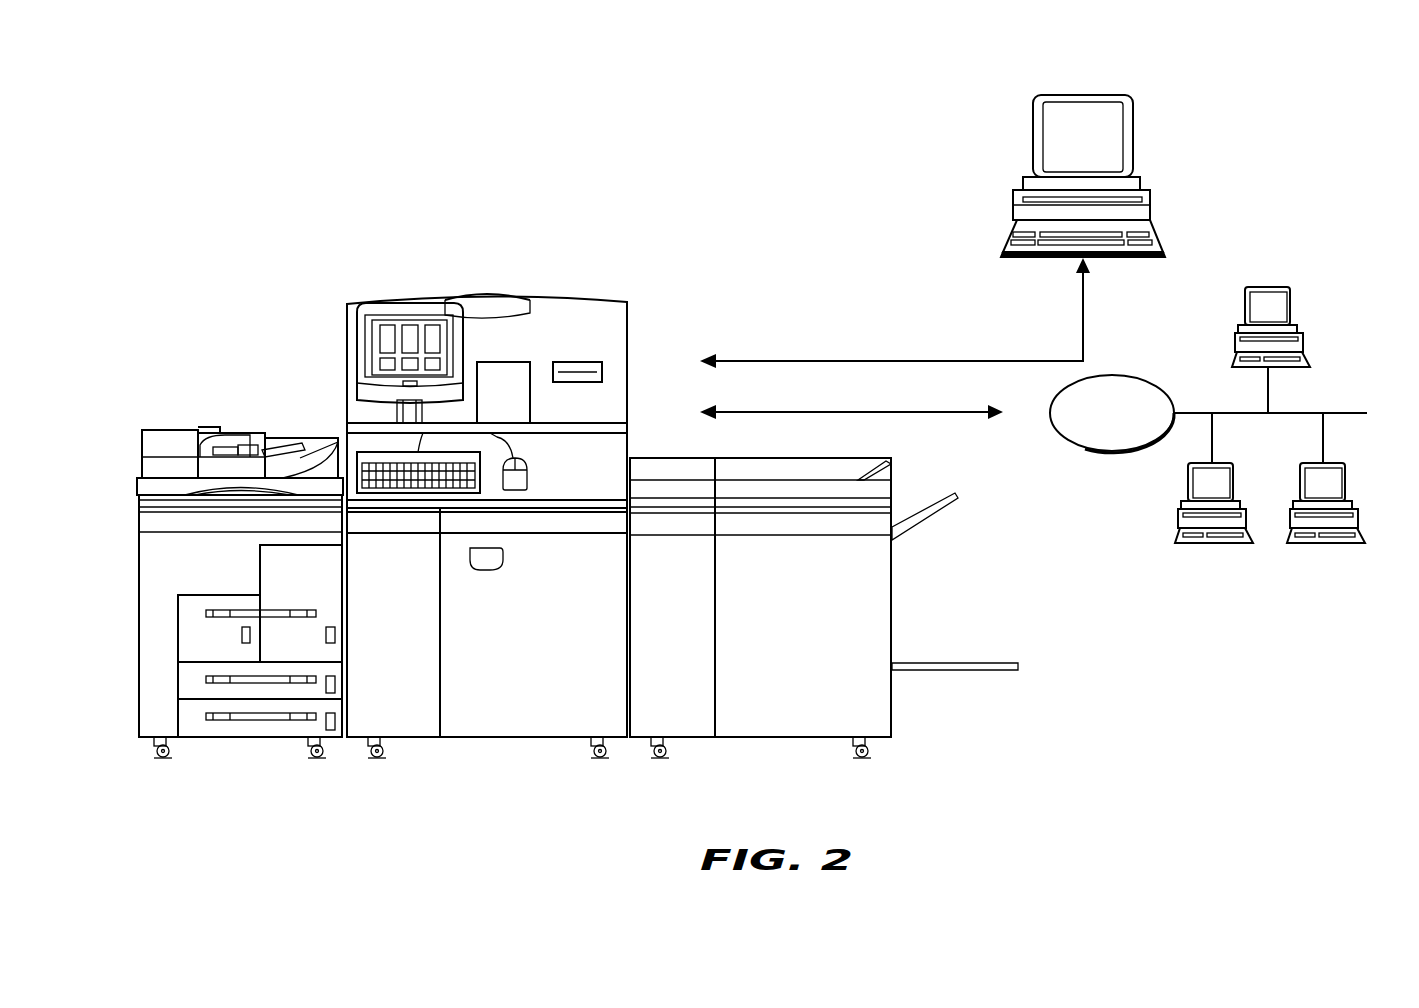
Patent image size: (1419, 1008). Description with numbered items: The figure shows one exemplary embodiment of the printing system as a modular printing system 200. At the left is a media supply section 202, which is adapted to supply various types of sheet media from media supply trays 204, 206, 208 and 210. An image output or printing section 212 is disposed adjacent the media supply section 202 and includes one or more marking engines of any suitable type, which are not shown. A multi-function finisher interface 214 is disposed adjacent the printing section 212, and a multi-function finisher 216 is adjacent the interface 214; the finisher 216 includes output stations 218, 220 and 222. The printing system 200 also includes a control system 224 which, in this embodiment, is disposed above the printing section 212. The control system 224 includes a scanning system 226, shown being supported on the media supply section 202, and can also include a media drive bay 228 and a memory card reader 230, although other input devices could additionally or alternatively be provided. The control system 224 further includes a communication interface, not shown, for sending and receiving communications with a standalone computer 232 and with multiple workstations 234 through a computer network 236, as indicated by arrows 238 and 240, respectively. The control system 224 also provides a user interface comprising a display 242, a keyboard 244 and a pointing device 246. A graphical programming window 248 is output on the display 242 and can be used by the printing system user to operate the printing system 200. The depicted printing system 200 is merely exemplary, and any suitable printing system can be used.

The modular printing system 200 is at (652, 262).
The media supply section 202 is at (243, 762).
The media supply tray 204 is at (187, 628).
The media supply tray 206 is at (335, 584).
The media supply tray 208 is at (187, 681).
The media supply tray 210 is at (187, 718).
The printing section 212 is at (528, 766).
The multi-function finisher interface 214 is at (693, 767).
The multi-function finisher 216 is at (804, 767).
The output station 218 is at (870, 463).
The output station 220 is at (927, 518).
The output station 222 is at (962, 662).
The control system 224 is at (490, 272).
The scanning system 226 is at (122, 458).
The media drive bay 228 is at (485, 363).
The memory card reader 230 is at (573, 362).
The standalone computer 232 is at (1133, 138).
The workstation 234 is at (1293, 309).
The computer network 236 is at (1133, 378).
The arrow 238 is at (758, 360).
The arrow 240 is at (757, 411).
The display 242 is at (405, 307).
The keyboard 244 is at (365, 452).
The pointing device 246 is at (528, 473).
The graphical programming window 248 is at (375, 333).